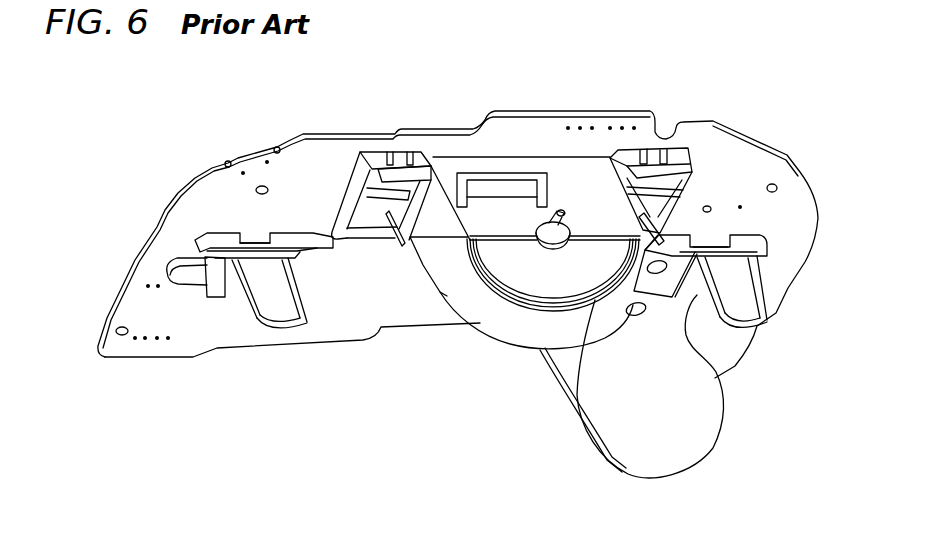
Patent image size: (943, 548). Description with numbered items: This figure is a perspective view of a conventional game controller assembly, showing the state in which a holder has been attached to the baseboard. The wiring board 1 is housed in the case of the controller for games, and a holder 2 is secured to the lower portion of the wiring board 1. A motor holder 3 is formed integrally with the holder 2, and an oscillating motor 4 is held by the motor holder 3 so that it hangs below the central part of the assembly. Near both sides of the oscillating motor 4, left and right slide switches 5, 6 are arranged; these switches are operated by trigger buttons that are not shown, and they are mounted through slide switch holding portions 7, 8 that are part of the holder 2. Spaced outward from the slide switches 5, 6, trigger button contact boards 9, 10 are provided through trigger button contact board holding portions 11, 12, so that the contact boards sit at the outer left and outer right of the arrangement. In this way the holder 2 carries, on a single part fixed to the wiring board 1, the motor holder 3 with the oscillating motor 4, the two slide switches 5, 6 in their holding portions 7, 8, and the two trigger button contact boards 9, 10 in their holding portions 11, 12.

The wiring board 1 is at (550, 95).
The holder 2 is at (594, 165).
The motor holder 3 is at (443, 263).
The oscillating motor 4 is at (593, 292).
The left slide switch 5 is at (392, 248).
The right slide switch 6 is at (664, 231).
The slide switch holding portion 7 is at (350, 174).
The slide switch holding portion 8 is at (658, 212).
The trigger button contact board 9 is at (288, 312).
The trigger button contact board 10 is at (750, 320).
The trigger button contact board holding portion 11 is at (232, 296).
The trigger button contact board holding portion 12 is at (717, 392).